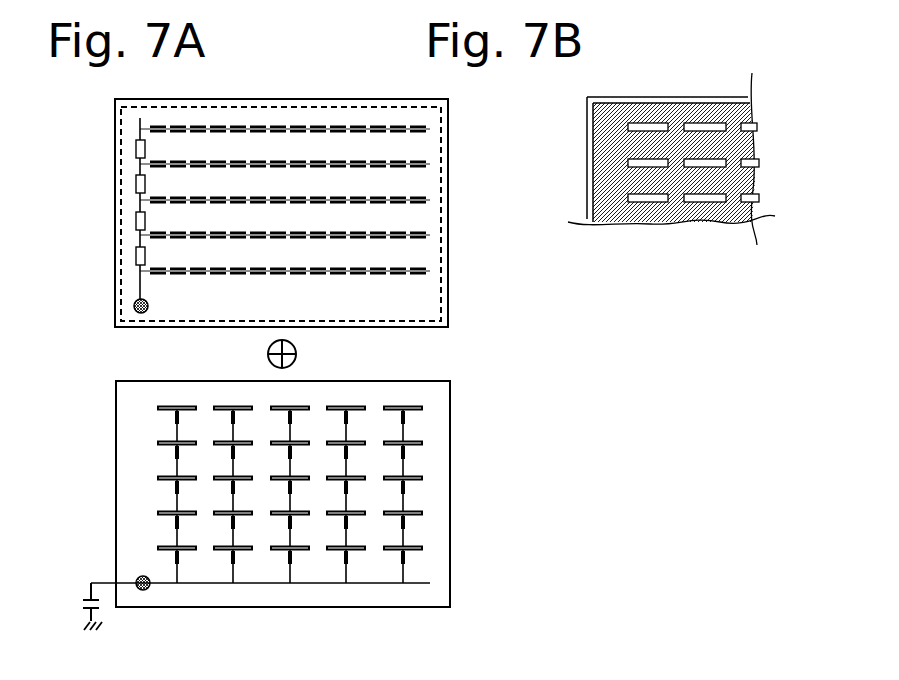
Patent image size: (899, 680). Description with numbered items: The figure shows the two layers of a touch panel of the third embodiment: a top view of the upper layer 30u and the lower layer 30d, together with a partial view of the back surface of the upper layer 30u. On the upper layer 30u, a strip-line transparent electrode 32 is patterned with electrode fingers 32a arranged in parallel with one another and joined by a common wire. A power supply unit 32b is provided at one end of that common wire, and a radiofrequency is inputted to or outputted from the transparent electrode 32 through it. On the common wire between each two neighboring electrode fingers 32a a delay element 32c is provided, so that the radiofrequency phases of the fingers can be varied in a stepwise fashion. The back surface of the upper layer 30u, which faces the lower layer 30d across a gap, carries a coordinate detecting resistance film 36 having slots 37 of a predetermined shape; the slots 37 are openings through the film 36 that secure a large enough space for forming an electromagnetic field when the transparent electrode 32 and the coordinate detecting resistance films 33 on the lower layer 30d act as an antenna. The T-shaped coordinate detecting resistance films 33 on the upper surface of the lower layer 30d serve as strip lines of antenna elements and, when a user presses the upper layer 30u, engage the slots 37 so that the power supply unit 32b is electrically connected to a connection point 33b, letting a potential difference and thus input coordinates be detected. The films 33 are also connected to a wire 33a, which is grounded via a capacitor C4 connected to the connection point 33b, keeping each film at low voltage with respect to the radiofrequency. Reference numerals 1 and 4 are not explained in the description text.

In FIG. 7A, the substrate 1 is at (380, 328).
In FIG. 7B, the substrate 1 is at (683, 97).
In FIG. 7A, the lower substrate 4 is at (440, 498).
In FIG. 7A, the upper layer 30u is at (458, 306).
In FIG. 7A, the lower layer 30d is at (459, 586).
In FIG. 7A, the transparent electrode 32 is at (300, 215).
In FIG. 7A, the electrode fingers 32a is at (316, 128).
In FIG. 7A, the power supply unit 32b is at (141, 313).
In FIG. 7A, the delay element 32c is at (138, 184).
In FIG. 7A, the coordinate detecting resistance films 33 is at (414, 439).
In FIG. 7A, the wire 33a is at (321, 588).
In FIG. 7A, the connection point 33b is at (143, 590).
In FIG. 7A, the coordinate detecting resistance film 36 is at (444, 224).
In FIG. 7B, the coordinate detecting resistance film 36 is at (680, 212).
In FIG. 7A, the slots 37 is at (421, 155).
In FIG. 7B, the slots 37 is at (637, 160).
In FIG. 7A, the capacitor C4 is at (80, 606).